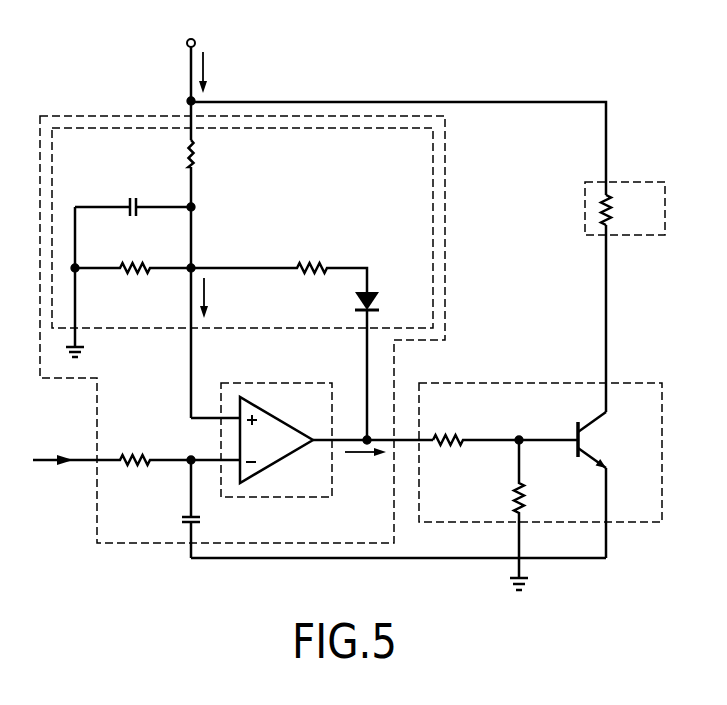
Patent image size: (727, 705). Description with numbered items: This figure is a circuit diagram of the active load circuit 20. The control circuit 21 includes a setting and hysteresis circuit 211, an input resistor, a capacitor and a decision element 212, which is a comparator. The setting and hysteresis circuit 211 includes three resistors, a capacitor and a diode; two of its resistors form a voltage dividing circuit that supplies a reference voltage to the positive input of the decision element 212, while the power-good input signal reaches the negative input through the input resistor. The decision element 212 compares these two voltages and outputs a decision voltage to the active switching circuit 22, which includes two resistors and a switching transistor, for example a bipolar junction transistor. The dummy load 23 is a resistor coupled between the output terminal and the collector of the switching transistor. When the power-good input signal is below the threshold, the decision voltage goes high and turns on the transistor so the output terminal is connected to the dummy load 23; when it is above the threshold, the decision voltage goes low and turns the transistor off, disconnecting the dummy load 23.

The active load circuit 20 is at (659, 45).
The control circuit 21 is at (445, 262).
The setting and hysteresis circuit 211 is at (433, 214).
The decision element 212 is at (257, 380).
The active switching circuit 22 is at (521, 380).
The dummy load 23 is at (632, 236).